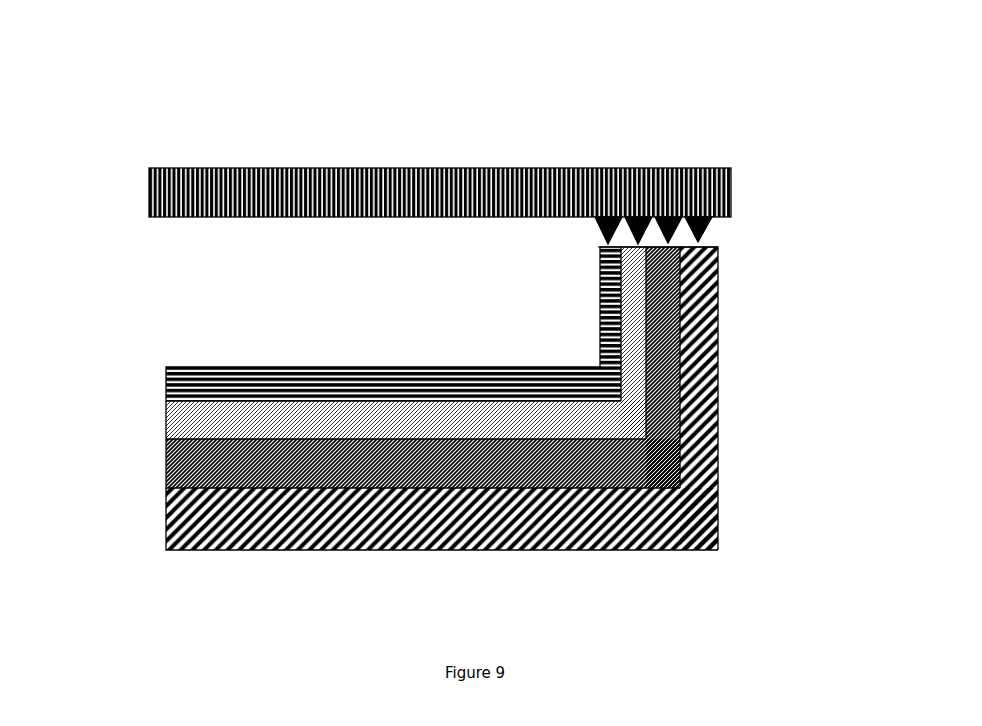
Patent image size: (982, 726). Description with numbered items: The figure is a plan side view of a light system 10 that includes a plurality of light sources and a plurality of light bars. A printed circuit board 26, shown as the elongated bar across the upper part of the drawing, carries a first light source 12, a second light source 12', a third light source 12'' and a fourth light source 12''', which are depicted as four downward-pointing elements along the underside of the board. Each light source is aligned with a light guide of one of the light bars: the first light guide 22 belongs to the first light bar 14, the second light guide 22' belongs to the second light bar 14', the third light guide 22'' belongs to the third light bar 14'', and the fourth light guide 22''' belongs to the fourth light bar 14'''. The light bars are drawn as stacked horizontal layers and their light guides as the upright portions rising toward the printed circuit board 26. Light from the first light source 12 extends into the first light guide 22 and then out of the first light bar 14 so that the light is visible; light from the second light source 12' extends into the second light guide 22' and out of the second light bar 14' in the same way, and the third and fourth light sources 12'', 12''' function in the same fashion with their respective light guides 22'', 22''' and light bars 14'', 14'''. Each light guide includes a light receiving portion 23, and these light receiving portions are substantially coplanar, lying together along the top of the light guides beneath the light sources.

The light system 10 is at (374, 109).
The printed circuit board 26 is at (467, 160).
The first light source 12 is at (616, 144).
The second light source 12' is at (665, 142).
The third light source 12'' is at (724, 151).
The fourth light source 12''' is at (768, 177).
The light receiving portion 23 is at (640, 238).
The first light bar 14 is at (367, 355).
The second light bar 14' is at (367, 407).
The third light bar 14'' is at (353, 474).
The fourth light bar 14''' is at (442, 575).
The first light guide 22 is at (708, 324).
The second light guide 22' is at (714, 343).
The third light guide 22'' is at (729, 367).
The fourth light guide 22''' is at (748, 398).